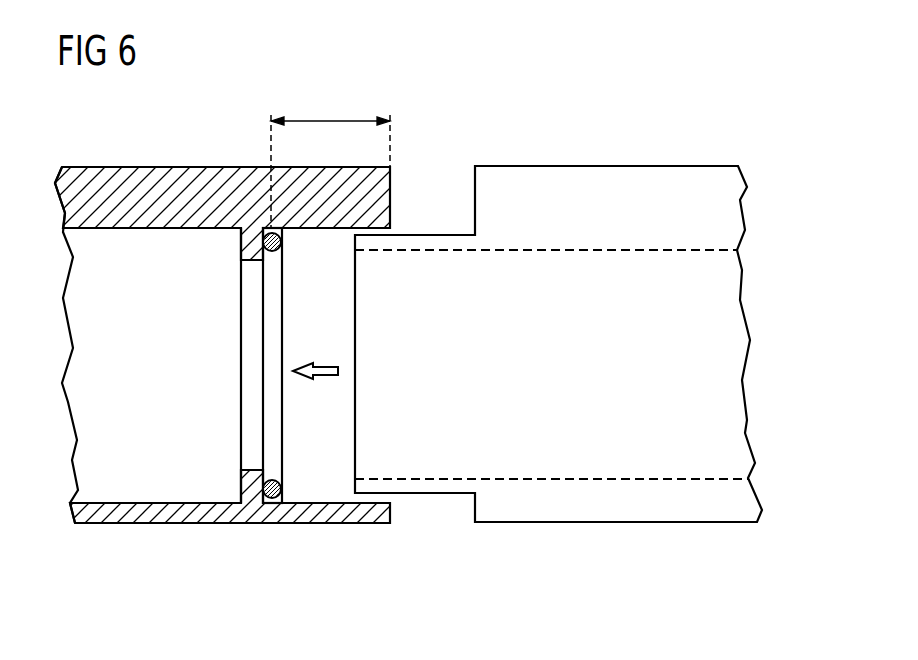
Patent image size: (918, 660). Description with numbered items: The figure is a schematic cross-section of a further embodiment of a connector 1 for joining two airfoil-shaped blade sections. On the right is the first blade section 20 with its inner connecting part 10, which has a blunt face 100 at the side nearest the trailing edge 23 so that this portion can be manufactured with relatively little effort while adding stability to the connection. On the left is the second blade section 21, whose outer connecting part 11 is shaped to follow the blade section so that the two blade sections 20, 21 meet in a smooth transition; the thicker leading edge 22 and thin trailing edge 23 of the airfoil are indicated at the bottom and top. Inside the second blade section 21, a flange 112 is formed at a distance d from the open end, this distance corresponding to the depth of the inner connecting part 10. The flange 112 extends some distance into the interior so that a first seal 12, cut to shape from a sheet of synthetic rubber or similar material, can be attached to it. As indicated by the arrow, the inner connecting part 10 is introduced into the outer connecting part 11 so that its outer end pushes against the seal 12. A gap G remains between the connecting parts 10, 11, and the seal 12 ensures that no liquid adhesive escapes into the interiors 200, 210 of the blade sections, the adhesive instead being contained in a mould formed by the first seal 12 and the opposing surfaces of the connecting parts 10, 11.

The connector 1 is at (477, 108).
The inner connecting part 10 is at (432, 470).
The outer connecting part 11 is at (312, 501).
The first seal 12 is at (283, 248).
The flange 112 is at (250, 488).
The first blade section 20 is at (578, 180).
The second blade section 21 is at (130, 178).
The leading edge 22 is at (152, 523).
The trailing edge 23 is at (207, 166).
The blunt face 100 is at (430, 235).
The interior of first blade section 200 is at (608, 381).
The interior of second blade section 210 is at (163, 383).
The gap G is at (355, 234).
The distance d is at (330, 158).